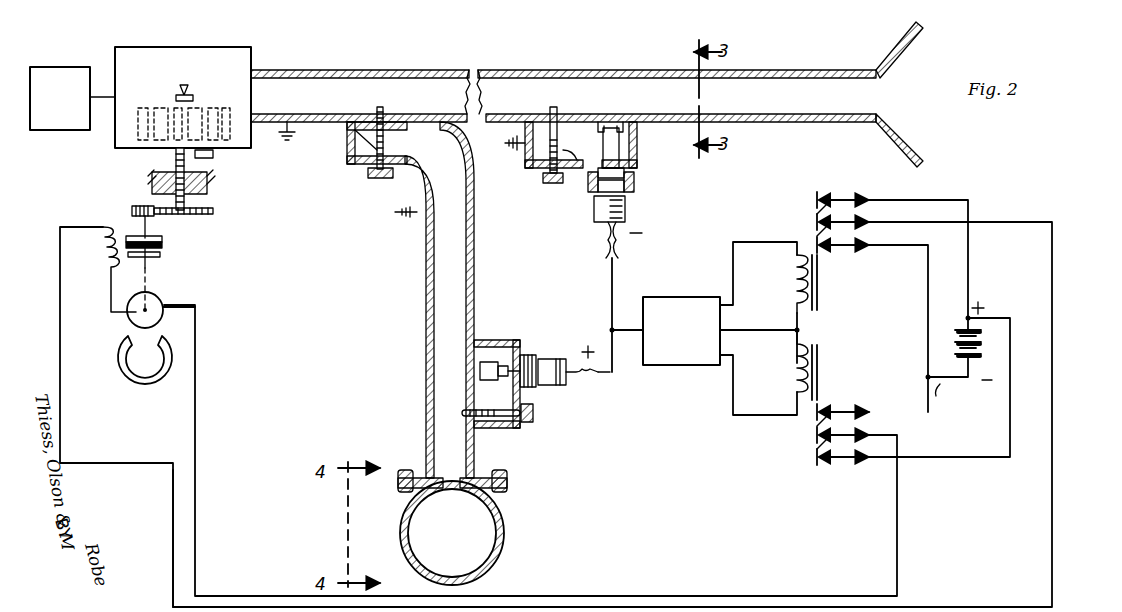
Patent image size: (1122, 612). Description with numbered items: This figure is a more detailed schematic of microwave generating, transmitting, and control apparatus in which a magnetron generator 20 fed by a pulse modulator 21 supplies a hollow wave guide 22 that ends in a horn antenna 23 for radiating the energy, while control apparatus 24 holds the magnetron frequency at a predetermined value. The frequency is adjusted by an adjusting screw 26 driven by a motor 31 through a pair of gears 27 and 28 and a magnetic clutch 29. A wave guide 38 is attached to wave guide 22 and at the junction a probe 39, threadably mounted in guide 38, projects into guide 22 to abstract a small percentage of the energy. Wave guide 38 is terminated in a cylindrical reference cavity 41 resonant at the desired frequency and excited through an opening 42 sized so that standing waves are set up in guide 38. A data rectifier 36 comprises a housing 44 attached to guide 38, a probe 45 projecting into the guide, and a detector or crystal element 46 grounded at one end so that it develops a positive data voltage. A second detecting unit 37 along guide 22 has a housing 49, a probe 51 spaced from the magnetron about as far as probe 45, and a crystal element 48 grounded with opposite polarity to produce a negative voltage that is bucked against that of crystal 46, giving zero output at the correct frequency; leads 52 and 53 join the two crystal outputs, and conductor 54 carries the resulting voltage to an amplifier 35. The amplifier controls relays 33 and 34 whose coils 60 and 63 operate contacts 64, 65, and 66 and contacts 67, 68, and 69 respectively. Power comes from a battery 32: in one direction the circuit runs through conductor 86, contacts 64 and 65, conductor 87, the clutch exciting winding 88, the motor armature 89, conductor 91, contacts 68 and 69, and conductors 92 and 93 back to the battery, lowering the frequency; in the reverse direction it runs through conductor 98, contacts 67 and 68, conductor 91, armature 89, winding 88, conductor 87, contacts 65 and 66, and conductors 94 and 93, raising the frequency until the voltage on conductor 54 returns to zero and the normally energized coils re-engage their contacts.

The magnetron generator 20 is at (258, 58).
The pulse modulator 21 is at (48, 130).
The hollow wave guide 22 is at (510, 70).
The horn antenna 23 is at (894, 142).
The control apparatus 24 is at (362, 371).
The adjusting screw 26 is at (210, 190).
The gear 27 is at (134, 208).
The gear 28 is at (200, 216).
The magnetic clutch 29 is at (160, 248).
The motor 31 is at (180, 332).
The battery 32 is at (982, 332).
The relay 33 is at (842, 246).
The relay 34 is at (852, 423).
The amplifier 35 is at (700, 364).
The data rectifier 36 is at (530, 389).
The second detecting unit 37 is at (595, 182).
The wave guide 38 is at (424, 306).
The probe 39 is at (356, 166).
The cylindrical cavity 41 is at (504, 526).
The opening 42 is at (448, 489).
The housing 44 is at (523, 408).
The probe 45 is at (490, 425).
The detector or crystal element 46 is at (488, 362).
The crystal element 48 is at (626, 146).
The housing 49 is at (530, 167).
The probe 51 is at (574, 193).
The lead 52 is at (598, 374).
The lead 53 is at (610, 280).
The conductor 54 is at (622, 330).
The relay coil 60 is at (793, 280).
The relay coil 63 is at (793, 378).
The contact 64 is at (830, 200).
The contact 65 is at (843, 219).
The contact 66 is at (843, 239).
The contact 67 is at (845, 460).
The contact 68 is at (843, 441).
The contact 69 is at (843, 419).
The conductor 86 is at (968, 210).
The conductor 87 is at (1052, 278).
The exciting winding 88 is at (102, 246).
The armature 89 is at (128, 318).
The conductor 91 is at (192, 516).
The conductor 92 is at (912, 428).
The conductor 93 is at (946, 394).
The conductor 94 is at (928, 296).
The conductor 98 is at (1010, 392).